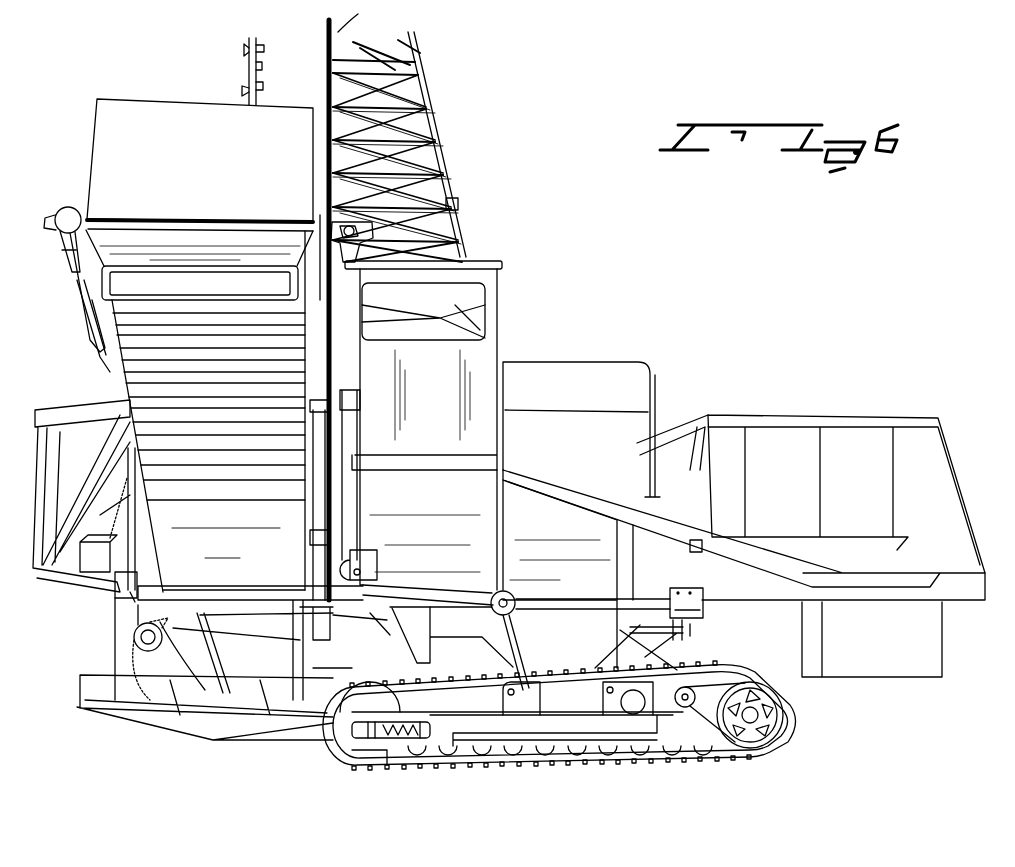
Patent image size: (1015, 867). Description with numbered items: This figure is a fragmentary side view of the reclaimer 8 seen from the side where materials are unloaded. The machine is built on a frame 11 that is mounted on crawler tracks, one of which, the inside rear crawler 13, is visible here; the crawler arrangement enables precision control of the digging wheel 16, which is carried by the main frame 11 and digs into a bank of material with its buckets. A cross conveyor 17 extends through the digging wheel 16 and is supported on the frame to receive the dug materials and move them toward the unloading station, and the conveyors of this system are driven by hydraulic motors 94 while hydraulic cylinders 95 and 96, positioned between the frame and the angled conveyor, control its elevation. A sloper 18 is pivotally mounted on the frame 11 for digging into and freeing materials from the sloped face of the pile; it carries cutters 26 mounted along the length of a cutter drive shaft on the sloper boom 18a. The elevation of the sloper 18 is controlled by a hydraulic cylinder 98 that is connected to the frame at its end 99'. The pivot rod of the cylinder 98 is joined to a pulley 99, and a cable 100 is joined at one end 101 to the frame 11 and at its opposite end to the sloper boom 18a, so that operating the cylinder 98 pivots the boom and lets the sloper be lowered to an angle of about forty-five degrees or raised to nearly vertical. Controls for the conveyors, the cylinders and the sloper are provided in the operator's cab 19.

The reclaimer 8 is at (985, 556).
The frame 11 is at (753, 602).
The inside rear crawler 13 is at (800, 720).
The digging wheel 16 is at (125, 652).
The cross conveyor 17 is at (122, 386).
The sloper 18 is at (246, 64).
The sloper boom 18a is at (423, 85).
The operator's cab 19 is at (500, 300).
The cutters 26 is at (265, 43).
The hydraulic motors 94 is at (62, 208).
The hydraulic cylinder 95 is at (98, 593).
The hydraulic cylinder 96 is at (314, 546).
The hydraulic cylinder 98 is at (608, 600).
The pulley 99 is at (466, 610).
The end of hydraulic cylinder 99' is at (666, 610).
The cable 100 is at (423, 587).
The end of cable 101 is at (220, 663).